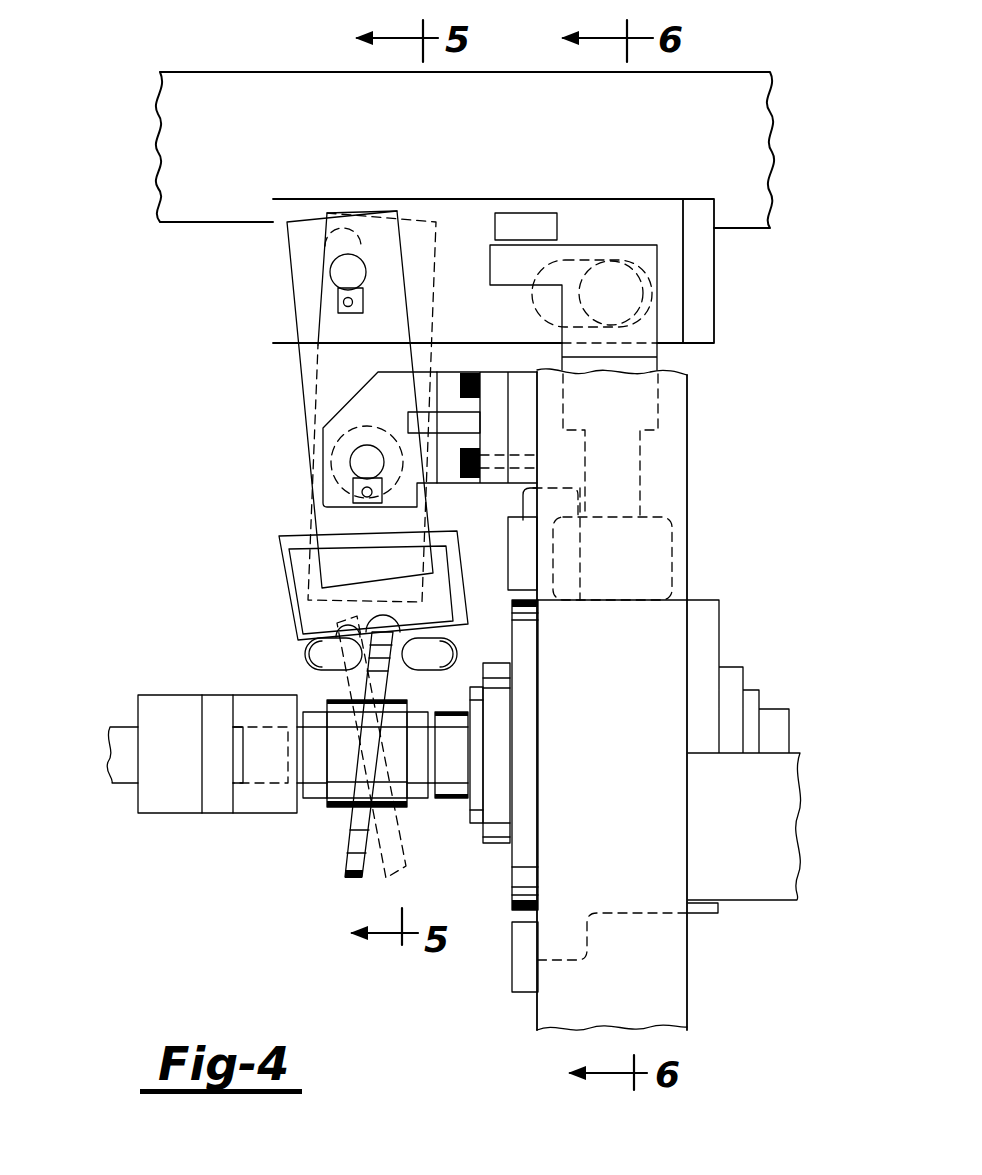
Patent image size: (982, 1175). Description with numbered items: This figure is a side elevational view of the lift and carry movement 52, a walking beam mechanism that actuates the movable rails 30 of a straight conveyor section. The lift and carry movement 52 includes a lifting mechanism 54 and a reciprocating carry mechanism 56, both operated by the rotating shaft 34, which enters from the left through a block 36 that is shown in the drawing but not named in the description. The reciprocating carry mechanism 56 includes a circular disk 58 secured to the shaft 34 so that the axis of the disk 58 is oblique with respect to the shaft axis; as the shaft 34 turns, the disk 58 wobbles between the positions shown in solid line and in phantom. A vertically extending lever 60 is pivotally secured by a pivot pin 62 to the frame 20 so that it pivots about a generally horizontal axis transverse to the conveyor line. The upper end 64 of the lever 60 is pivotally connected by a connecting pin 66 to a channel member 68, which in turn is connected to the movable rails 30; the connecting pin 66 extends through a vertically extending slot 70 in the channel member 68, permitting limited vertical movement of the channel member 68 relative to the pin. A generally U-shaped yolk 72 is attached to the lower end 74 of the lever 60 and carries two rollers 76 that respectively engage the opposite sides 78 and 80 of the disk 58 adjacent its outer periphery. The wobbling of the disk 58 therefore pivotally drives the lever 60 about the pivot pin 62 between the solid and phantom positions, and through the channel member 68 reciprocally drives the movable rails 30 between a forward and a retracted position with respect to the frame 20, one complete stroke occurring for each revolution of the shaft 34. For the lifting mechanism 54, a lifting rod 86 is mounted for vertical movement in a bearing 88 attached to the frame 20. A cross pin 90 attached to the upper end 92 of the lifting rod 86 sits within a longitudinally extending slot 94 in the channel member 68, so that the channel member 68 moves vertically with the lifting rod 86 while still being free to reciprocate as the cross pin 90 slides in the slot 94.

The frame 20 is at (680, 995).
The movable rails 30 is at (727, 72).
The shaft 34 is at (118, 783).
The bearing block 36 is at (246, 813).
The lift and carry movement 52 is at (470, 969).
The lifting mechanism 54 is at (676, 358).
The reciprocating carry mechanism 56 is at (291, 390).
The circular disk 58 is at (355, 879).
The lever 60 is at (323, 430).
The pivot pin 62 is at (360, 461).
The upper end of lever 64 is at (297, 241).
The connecting pin 66 is at (345, 288).
The channel member 68 is at (668, 285).
The vertically extending slot 70 is at (348, 274).
The yolk 72 is at (282, 579).
The lower end of lever 74 is at (318, 532).
The rollers 76 is at (305, 655).
The side of disk 78 is at (348, 853).
The side of disk 80 is at (398, 845).
The lifting rod 86 is at (637, 475).
The bearing 88 is at (672, 550).
The cross pin 90 is at (672, 255).
The upper end of lifting rod 92 is at (653, 330).
The longitudinally extending slot 94 is at (563, 262).